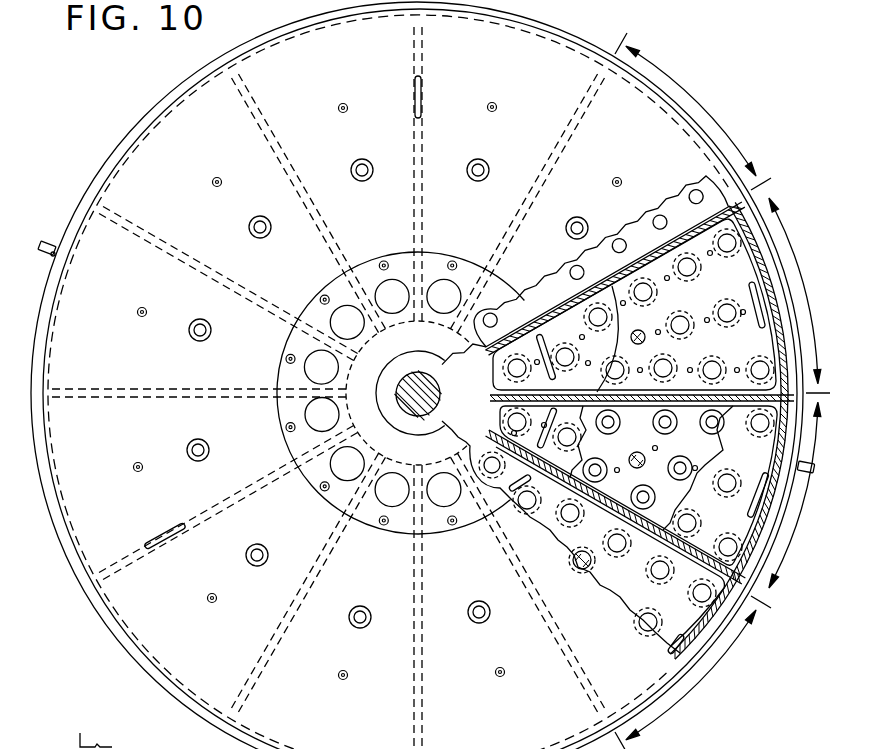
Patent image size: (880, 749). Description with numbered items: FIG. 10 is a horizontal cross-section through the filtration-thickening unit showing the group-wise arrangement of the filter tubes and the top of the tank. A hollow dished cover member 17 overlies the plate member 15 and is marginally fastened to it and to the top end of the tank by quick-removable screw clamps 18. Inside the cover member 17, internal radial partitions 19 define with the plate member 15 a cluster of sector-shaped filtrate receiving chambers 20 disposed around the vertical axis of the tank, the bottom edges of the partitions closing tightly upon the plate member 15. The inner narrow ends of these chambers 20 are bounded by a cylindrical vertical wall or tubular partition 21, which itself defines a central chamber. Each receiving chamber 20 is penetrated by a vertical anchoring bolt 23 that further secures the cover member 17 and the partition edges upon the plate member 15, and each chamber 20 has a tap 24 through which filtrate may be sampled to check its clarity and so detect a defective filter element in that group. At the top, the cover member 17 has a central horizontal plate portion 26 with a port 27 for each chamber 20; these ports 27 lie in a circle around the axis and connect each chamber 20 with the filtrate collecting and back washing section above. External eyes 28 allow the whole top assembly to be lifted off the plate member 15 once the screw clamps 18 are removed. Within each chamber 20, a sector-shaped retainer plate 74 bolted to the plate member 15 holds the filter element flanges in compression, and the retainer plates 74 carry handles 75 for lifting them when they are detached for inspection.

The plate member 15 is at (702, 458).
The dished cover member 17 is at (143, 185).
The screw clamps 18 is at (41, 243).
The internal radial partitions 19 is at (503, 240).
The filtrate receiving chambers 20 is at (722, 391).
The tubular partition 21 is at (488, 373).
The vertical anchoring bolt 23 is at (353, 163).
The tap 24 is at (339, 105).
The central horizontal plate portion 26 is at (297, 342).
The port 27 is at (321, 370).
The external eyes 28 is at (425, 100).
The retainer plate 74 is at (727, 299).
The handles 75 is at (559, 326).